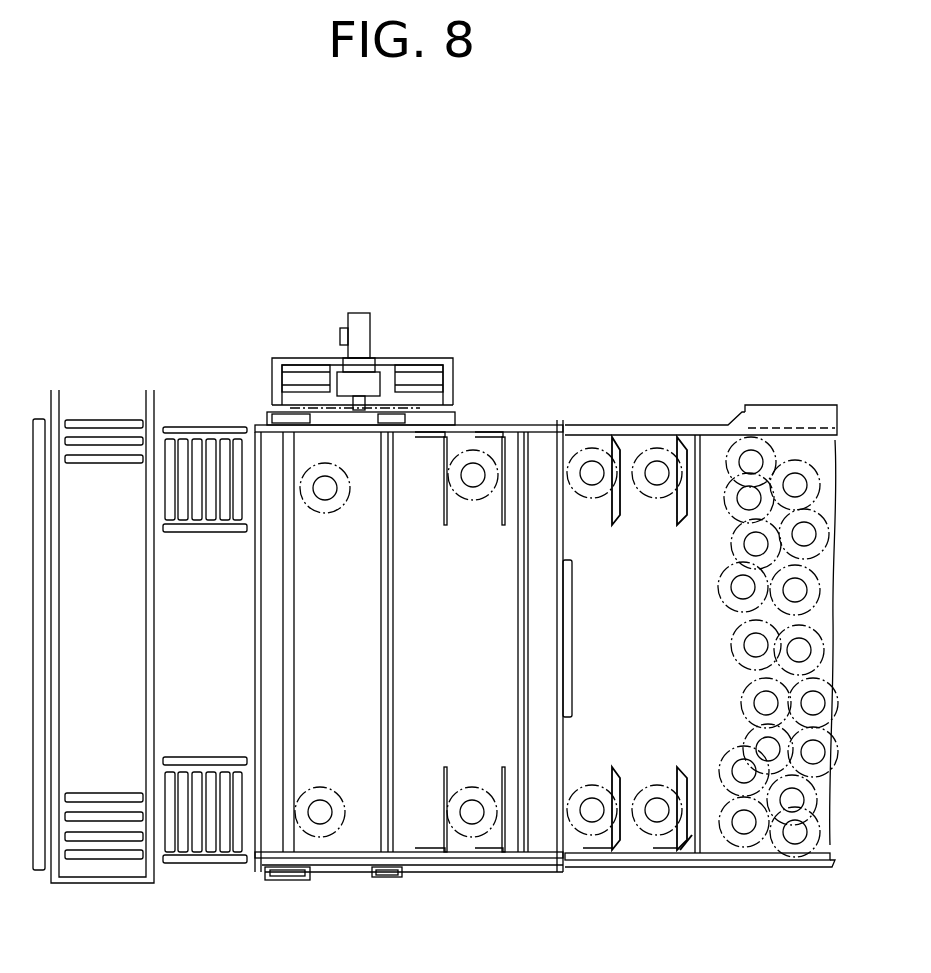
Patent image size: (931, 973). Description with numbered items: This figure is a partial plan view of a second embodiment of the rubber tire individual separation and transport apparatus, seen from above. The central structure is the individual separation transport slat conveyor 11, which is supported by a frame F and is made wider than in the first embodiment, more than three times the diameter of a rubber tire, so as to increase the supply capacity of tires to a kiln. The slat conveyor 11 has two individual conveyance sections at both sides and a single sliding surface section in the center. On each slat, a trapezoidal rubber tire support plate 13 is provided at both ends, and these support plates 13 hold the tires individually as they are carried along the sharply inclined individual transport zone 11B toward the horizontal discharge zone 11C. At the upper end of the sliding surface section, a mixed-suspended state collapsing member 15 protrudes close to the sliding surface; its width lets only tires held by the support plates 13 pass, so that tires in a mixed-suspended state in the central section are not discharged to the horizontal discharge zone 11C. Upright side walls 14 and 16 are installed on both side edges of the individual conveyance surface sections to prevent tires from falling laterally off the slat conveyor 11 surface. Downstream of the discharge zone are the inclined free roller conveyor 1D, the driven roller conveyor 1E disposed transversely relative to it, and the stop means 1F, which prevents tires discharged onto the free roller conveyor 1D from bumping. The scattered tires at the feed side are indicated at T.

The free roller conveyor 1D is at (213, 845).
The driven roller conveyor 1E is at (115, 855).
The stop means 1F is at (44, 866).
The slat conveyor 11 is at (413, 880).
The individual transport zone 11B is at (592, 845).
The horizontal discharge zone 11C is at (355, 840).
The rubber tire support plate 13 is at (513, 450).
The side wall 14 is at (640, 858).
The mixed-suspended state collapsing member 15 is at (573, 694).
The side wall 16 is at (620, 432).
The frame F is at (562, 420).
The tray of rolls T is at (792, 412).